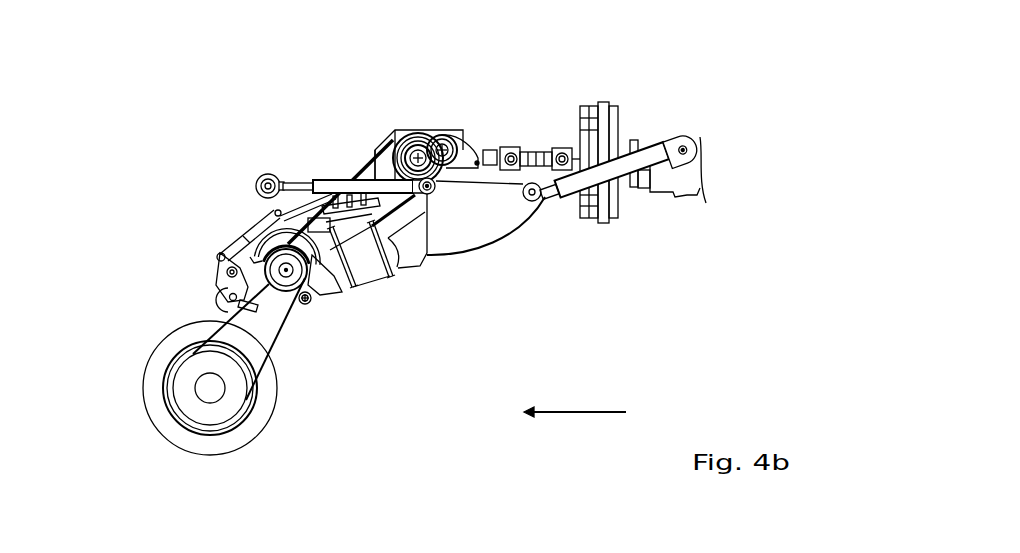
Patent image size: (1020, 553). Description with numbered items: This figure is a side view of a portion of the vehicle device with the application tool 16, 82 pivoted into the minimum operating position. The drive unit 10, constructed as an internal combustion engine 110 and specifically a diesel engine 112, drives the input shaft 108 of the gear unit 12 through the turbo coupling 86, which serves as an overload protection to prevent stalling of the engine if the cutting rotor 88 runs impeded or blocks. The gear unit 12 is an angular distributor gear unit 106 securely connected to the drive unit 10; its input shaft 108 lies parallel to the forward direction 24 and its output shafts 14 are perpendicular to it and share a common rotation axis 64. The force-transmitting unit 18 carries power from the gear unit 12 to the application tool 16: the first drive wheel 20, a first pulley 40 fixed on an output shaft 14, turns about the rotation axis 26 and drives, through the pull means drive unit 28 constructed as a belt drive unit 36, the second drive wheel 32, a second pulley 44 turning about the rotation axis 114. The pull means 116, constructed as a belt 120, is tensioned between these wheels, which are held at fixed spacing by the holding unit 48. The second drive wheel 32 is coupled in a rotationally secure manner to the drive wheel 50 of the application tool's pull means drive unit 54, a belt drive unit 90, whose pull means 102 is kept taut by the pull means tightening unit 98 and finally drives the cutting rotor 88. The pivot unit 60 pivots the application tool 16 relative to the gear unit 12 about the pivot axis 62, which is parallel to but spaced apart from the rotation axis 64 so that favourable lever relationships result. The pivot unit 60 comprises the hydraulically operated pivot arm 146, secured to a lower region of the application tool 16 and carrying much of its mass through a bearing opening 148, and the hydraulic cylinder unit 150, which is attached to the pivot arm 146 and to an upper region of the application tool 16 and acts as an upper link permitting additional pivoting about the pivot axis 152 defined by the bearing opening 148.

The drive unit 10 is at (718, 206).
The internal combustion engine 110 is at (718, 206).
The diesel engine 112 is at (680, 180).
The gear unit 12 is at (555, 120).
The angular distributor gear unit 106 is at (460, 130).
The output shafts 14 is at (432, 140).
The application tool 16 is at (161, 274).
The tensioning arm 82 is at (178, 300).
The force-transmitting unit 18 is at (378, 142).
The first drive wheel 20 is at (428, 100).
The first pulley 40 is at (412, 135).
The forward direction 24 is at (580, 413).
The rotation axis 26 is at (384, 91).
The rotation axis 64 is at (390, 130).
The pull means drive unit 28 is at (292, 167).
The belt drive unit 36 is at (343, 163).
The second drive wheel 32 is at (279, 178).
The second pulley 44 is at (268, 221).
The holding unit 48 is at (415, 270).
The drive wheel 50 is at (363, 251).
The pull means drive unit 54 is at (258, 371).
The belt drive unit 90 is at (285, 344).
The pivot unit 60 is at (439, 276).
The pivot axis 62 is at (475, 140).
The turbo coupling 86 is at (613, 115).
The cutting rotor 88 is at (167, 430).
The pull means tightening unit 98 is at (202, 234).
The pull means 102 is at (190, 327).
The input shaft 108 is at (557, 197).
The rotation axis 114 is at (272, 212).
The pull means 116 is at (282, 98).
The belt 120 is at (363, 153).
The pivot arm 146 is at (405, 275).
The bearing opening 148 is at (307, 310).
The hydraulic cylinder unit 150 is at (405, 222).
The pivot axis 152 is at (347, 293).